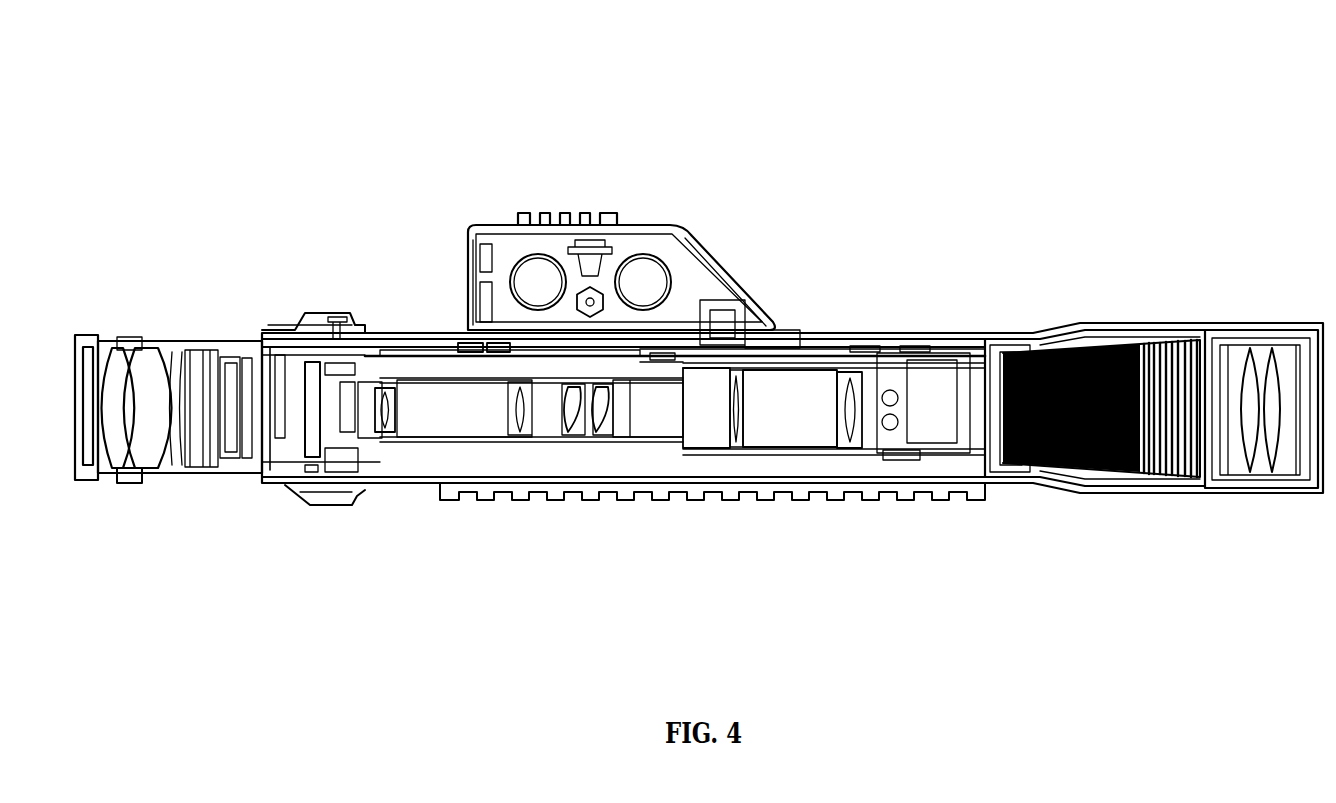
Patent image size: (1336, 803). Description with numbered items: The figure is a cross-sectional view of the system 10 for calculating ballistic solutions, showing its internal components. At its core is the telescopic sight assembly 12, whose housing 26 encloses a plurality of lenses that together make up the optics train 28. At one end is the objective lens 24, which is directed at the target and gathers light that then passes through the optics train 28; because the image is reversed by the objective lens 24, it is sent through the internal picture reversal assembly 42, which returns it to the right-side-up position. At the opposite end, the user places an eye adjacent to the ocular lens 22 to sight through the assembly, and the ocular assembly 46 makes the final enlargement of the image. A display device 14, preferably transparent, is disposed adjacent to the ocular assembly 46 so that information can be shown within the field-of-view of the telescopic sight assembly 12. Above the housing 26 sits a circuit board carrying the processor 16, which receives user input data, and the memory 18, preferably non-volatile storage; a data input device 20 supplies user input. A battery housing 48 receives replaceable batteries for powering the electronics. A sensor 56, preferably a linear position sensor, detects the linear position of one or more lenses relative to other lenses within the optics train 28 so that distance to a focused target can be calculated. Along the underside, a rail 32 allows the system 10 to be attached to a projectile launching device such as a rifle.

The system 10 is at (426, 84).
The telescopic sight assembly 12 is at (744, 504).
The display device 14 is at (257, 387).
The processor 16 is at (470, 348).
The memory 18 is at (470, 345).
The data input device 20 is at (497, 348).
The ocular lens 22 is at (107, 390).
The objective lens 24 is at (1273, 368).
The housing 26 is at (950, 333).
The optics train 28 is at (403, 411).
The rail 32 is at (588, 416).
The internal picture reversal assembly 42 is at (628, 494).
The ocular assembly 46 is at (132, 493).
The battery housing 48 is at (642, 225).
The sensor 56 is at (848, 358).